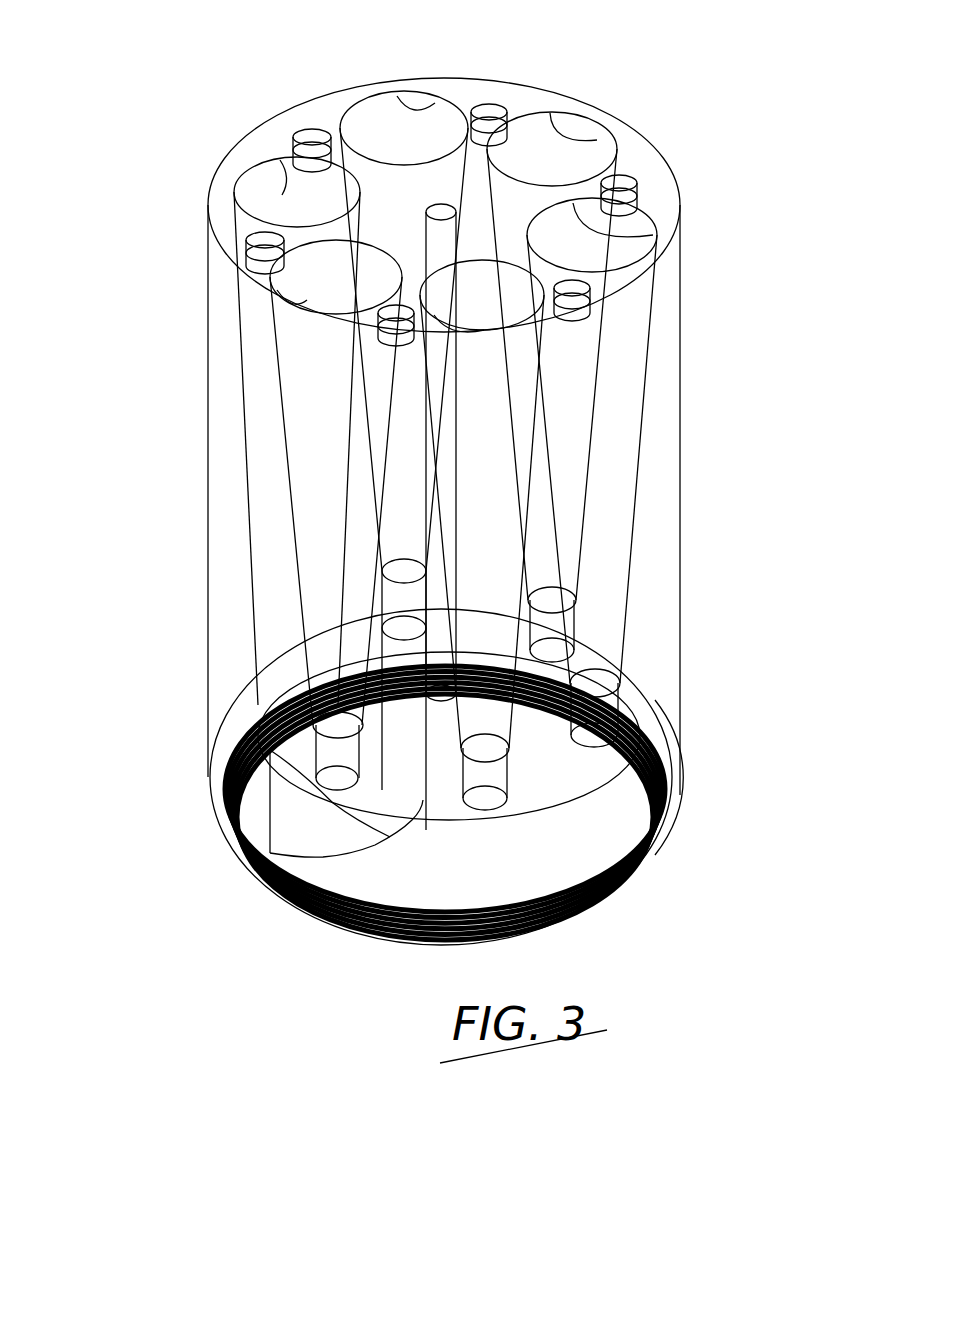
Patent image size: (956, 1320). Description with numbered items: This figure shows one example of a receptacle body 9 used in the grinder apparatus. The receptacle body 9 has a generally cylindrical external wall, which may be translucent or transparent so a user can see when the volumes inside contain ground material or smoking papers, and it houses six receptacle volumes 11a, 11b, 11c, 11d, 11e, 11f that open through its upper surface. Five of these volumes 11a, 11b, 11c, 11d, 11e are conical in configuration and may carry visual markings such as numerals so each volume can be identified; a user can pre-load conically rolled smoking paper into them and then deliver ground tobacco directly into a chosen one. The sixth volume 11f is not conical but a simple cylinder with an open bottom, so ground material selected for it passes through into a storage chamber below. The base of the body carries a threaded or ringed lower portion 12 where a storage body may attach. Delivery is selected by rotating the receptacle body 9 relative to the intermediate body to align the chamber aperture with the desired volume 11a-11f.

The receptacle body 9 is at (733, 537).
The receptacle volume 11a is at (303, 273).
The receptacle volume 11b is at (443, 337).
The receptacle volume 11c is at (577, 234).
The receptacle volume 11d is at (560, 145).
The receptacle volume 11e is at (435, 103).
The receptacle volume 11f is at (275, 195).
The bottom cap 12 is at (225, 822).